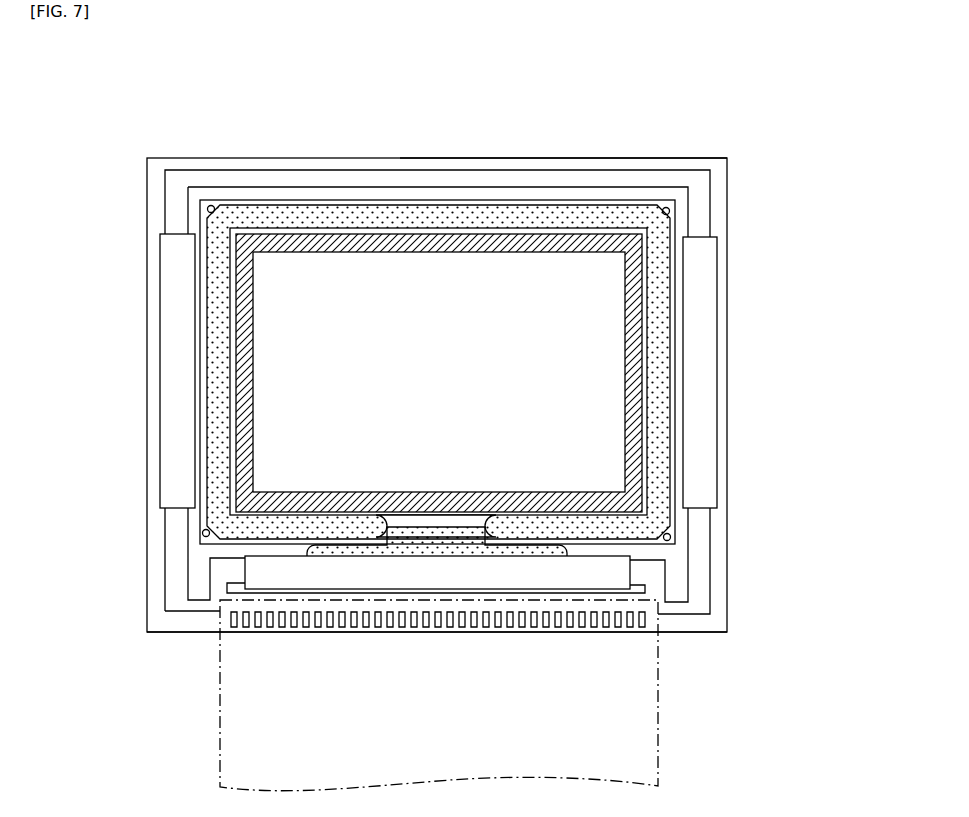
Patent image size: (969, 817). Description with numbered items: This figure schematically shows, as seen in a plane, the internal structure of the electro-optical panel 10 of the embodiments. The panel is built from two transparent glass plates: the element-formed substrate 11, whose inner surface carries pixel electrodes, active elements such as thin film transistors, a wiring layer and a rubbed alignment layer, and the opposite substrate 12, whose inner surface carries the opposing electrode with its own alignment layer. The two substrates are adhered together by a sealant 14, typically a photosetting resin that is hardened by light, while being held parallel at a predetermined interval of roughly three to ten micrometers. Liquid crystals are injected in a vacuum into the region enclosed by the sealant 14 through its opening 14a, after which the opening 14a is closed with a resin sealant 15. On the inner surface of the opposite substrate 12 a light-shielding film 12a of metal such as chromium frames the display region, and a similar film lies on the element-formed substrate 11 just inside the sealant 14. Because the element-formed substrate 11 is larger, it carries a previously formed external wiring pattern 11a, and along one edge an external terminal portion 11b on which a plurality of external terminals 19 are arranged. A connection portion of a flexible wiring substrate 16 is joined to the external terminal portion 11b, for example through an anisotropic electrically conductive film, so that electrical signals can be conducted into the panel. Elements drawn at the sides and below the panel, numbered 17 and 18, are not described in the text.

The electro-optical panel 10 is at (448, 101).
The element-formed substrate 11 is at (207, 158).
The external wiring pattern 11a is at (658, 158).
The external terminal portion 11b is at (463, 634).
The opposite substrate 12 is at (486, 200).
The light-shielding film 12a is at (252, 362).
The sealant 14 is at (291, 204).
The opening 14a is at (398, 517).
The sealant 15 is at (442, 528).
The flexible wiring substrate 16 is at (658, 673).
The side cushion members 17 is at (160, 383).
The driver IC 18 is at (270, 590).
The external terminals 19 is at (352, 634).